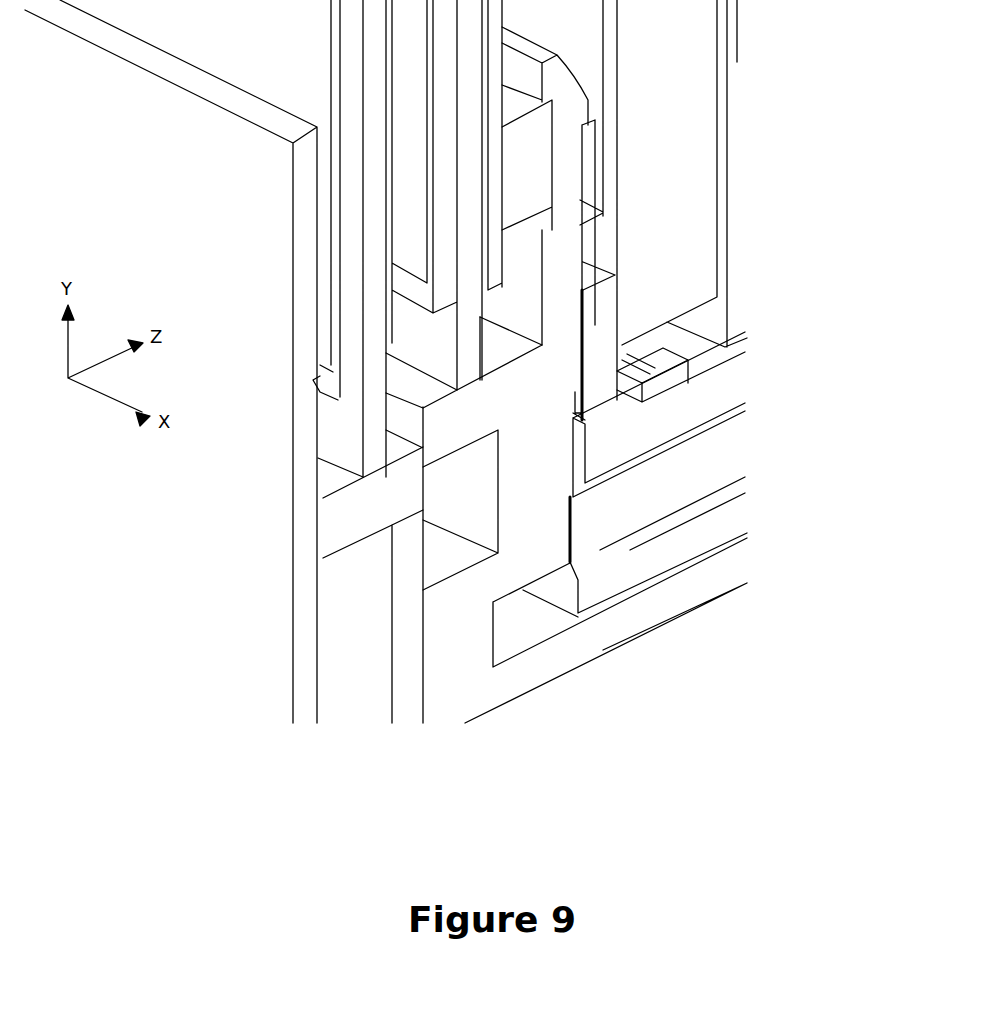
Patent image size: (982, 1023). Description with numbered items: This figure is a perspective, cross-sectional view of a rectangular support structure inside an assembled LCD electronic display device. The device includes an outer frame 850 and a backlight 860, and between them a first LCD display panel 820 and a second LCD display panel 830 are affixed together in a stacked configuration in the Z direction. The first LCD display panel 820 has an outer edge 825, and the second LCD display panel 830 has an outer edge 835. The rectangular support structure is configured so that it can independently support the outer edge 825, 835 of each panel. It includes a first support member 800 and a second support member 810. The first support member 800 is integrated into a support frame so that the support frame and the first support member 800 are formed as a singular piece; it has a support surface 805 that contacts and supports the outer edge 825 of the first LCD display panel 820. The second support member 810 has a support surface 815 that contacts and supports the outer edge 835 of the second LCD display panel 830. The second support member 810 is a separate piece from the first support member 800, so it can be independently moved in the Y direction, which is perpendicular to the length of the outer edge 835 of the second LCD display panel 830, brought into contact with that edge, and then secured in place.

The first support member 800 is at (557, 465).
The support surface 805 is at (552, 350).
The second support member 810 is at (327, 516).
The support surface 815 is at (312, 478).
The first LCD display panel 820 is at (482, 157).
The outer edge 825 is at (467, 405).
The second LCD display panel 830 is at (395, 235).
The outer edge 835 is at (380, 491).
The outer frame 850 is at (240, 75).
The backlight 860 is at (675, 55).